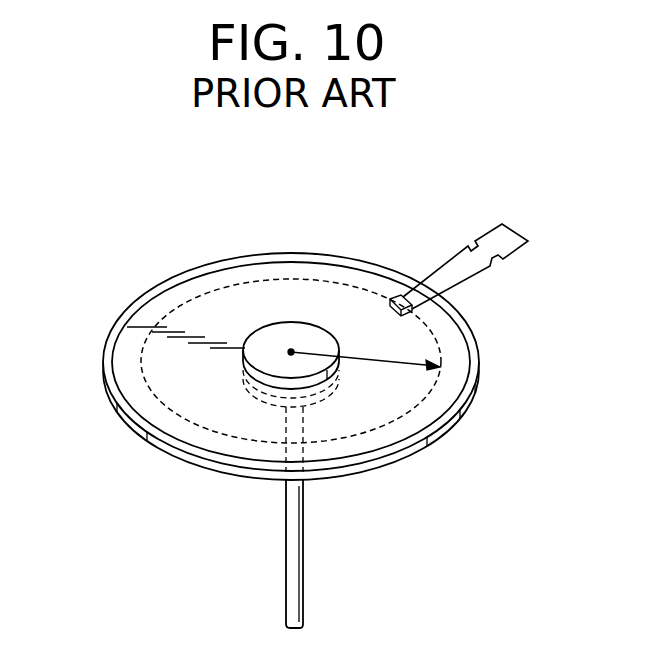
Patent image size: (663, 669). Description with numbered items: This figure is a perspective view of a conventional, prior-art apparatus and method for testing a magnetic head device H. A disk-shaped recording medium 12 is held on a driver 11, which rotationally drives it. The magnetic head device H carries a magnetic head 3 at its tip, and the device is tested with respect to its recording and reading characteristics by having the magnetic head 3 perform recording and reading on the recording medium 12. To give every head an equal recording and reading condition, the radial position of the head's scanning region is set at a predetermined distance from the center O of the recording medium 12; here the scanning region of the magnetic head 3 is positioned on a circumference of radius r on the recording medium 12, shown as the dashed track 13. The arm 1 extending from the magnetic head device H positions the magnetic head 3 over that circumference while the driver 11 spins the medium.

The turntable 11 is at (410, 459).
The rim of turntable 12 is at (372, 280).
The recording track 13 is at (320, 278).
The center of rotation O is at (291, 352).
The radius r is at (365, 351).
The head H is at (523, 236).
The head arm 1 is at (482, 267).
The head pad 3 is at (410, 316).